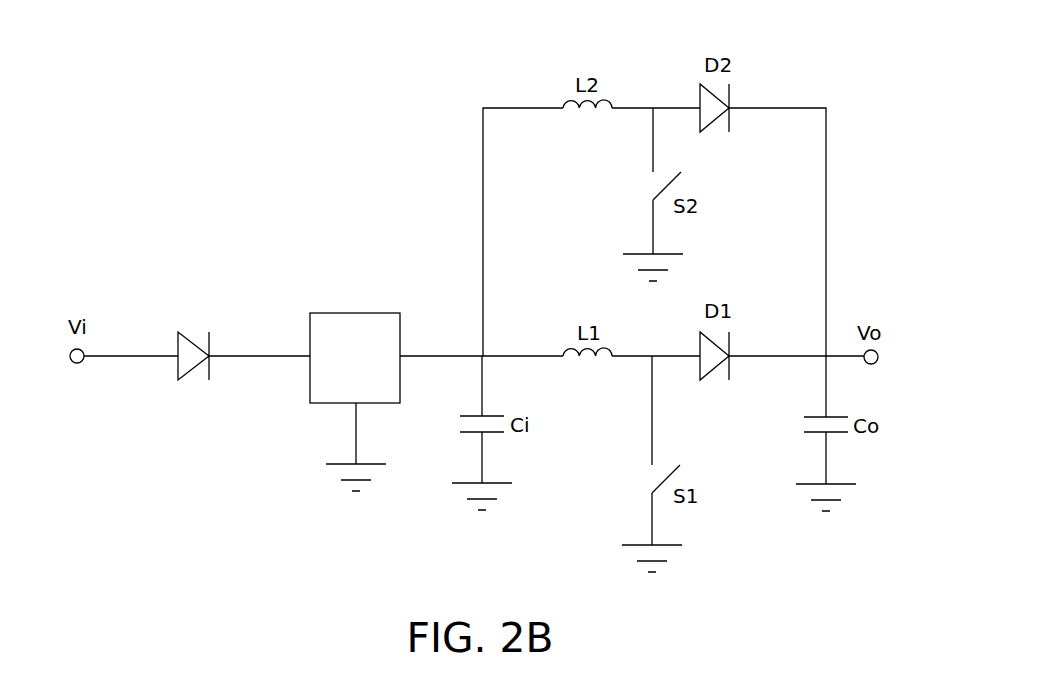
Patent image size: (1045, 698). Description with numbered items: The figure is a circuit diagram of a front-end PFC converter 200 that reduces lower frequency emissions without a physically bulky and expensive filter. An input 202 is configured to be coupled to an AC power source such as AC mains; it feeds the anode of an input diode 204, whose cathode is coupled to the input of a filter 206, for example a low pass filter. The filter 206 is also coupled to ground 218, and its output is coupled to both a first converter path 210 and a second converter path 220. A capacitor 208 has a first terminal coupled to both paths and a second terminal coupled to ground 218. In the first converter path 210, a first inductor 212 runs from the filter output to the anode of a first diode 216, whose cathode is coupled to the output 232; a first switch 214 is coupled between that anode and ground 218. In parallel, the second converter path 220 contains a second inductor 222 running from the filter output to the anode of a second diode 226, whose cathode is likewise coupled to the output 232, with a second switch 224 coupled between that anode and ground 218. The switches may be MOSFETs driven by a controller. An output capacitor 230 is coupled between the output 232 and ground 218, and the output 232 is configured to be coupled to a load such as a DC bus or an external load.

The front-end PFC converter 200 is at (128, 245).
The input 202 is at (70, 360).
The input diode 204 is at (190, 376).
The filter 206 is at (337, 313).
The capacitor 208 is at (493, 410).
The first converter path 210 is at (878, 290).
The first inductor 212 is at (566, 347).
The first switch 214 is at (645, 483).
The first diode 216 is at (711, 375).
The ground 218 is at (370, 463).
The second converter path 220 is at (868, 88).
The second inductor 222 is at (568, 100).
The second switch 224 is at (645, 190).
The second diode 226 is at (712, 127).
The output capacitor 230 is at (835, 415).
The output 232 is at (879, 360).